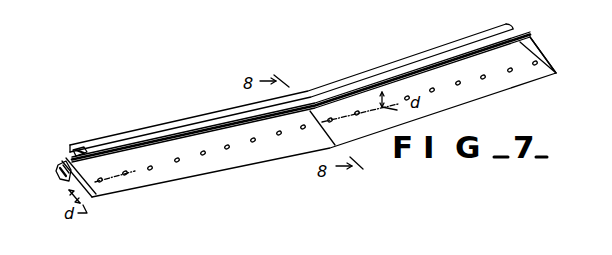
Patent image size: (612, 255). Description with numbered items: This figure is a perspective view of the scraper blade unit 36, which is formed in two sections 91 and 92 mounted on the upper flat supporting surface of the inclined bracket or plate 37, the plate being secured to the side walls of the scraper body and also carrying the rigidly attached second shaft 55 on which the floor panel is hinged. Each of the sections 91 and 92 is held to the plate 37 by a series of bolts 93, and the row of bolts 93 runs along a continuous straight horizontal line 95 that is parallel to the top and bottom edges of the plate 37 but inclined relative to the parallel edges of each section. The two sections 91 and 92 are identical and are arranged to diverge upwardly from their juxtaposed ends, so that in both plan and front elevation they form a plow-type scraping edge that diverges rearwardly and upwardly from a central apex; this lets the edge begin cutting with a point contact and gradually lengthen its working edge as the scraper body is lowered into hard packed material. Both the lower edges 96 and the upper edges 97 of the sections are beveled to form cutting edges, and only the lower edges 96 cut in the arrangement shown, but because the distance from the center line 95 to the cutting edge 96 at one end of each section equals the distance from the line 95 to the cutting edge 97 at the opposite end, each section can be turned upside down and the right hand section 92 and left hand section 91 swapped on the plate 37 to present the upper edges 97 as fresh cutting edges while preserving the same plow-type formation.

The scraper blade unit 36 is at (148, 190).
The bracket or plate 37 is at (62, 183).
The second shaft 55 is at (73, 152).
The section 91 is at (298, 148).
The section 92 is at (486, 99).
The bolts 93 is at (226, 150).
The continuous straight horizontal line 95 is at (301, 96).
The lower edges 96 is at (178, 190).
The upper edges 97 is at (134, 144).